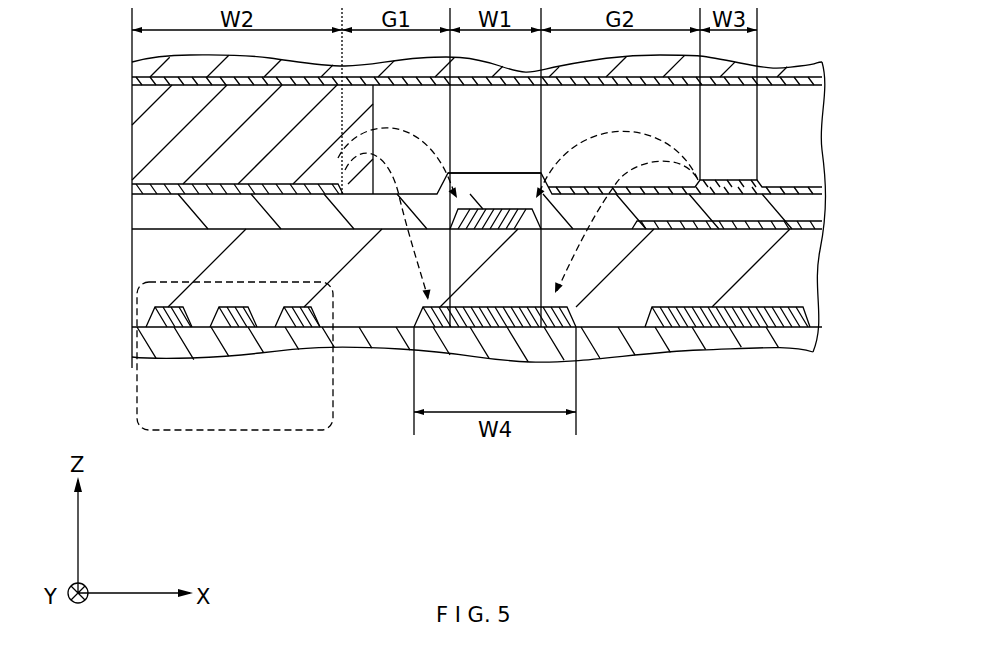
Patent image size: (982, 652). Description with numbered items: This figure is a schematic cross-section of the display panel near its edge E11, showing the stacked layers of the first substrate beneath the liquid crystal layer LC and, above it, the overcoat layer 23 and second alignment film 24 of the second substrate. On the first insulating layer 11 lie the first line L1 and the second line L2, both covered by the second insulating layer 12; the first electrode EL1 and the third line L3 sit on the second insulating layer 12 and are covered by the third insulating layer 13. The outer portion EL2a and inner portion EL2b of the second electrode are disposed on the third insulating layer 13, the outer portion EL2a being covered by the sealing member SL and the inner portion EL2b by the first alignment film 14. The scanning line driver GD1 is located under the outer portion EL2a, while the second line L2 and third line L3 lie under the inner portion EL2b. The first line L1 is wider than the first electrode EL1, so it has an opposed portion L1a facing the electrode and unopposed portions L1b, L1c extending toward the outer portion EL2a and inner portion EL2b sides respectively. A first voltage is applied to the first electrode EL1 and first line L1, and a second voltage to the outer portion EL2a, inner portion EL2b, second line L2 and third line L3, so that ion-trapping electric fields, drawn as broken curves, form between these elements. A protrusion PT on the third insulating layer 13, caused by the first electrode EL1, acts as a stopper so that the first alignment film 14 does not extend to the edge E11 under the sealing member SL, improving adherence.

The first insulating layer 11 is at (795, 350).
The second insulating layer 12 is at (802, 270).
The third insulating layer 13 is at (803, 207).
The first alignment film 14 is at (803, 185).
The overcoat layer 23 is at (787, 65).
The second alignment film 24 is at (813, 87).
The liquid crystal layer LC is at (813, 153).
The sealing member SL is at (138, 110).
The first electrode EL1 is at (493, 213).
The outer portion EL2a is at (137, 174).
The inner portion EL2b is at (742, 183).
The protrusion PT is at (512, 173).
The edge E11 is at (117, 258).
The first line L1 is at (490, 327).
The opposed portion L1a is at (520, 307).
The unopposed portion L1b is at (422, 307).
The unopposed portion L1c is at (577, 313).
The second line L2 is at (707, 327).
The third line L3 is at (683, 229).
The scanning line driver GD1 is at (282, 432).